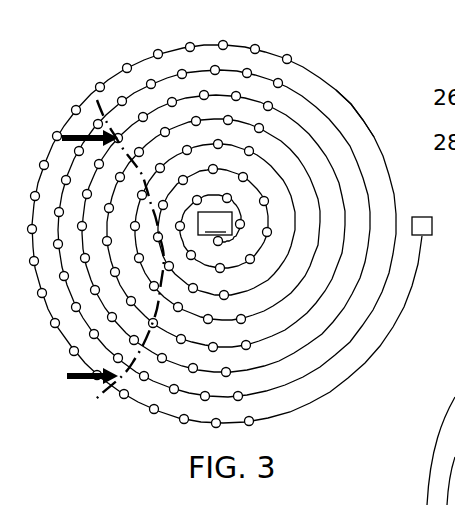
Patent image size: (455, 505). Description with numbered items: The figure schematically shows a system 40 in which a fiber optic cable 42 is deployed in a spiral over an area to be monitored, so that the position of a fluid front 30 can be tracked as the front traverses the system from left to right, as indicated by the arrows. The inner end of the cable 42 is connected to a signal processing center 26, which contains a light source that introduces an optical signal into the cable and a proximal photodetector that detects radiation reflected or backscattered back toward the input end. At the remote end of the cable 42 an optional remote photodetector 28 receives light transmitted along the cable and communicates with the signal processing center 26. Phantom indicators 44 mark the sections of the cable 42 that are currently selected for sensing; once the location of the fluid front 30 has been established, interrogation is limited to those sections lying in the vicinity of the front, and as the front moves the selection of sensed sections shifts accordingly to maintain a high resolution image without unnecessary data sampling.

The system 40 is at (373, 89).
The cable 42 is at (363, 113).
The phantom indicators 44 is at (124, 64).
The signal processing center 26 is at (215, 223).
The remote photodetector 28 is at (422, 217).
The fluid front 30 is at (137, 250).